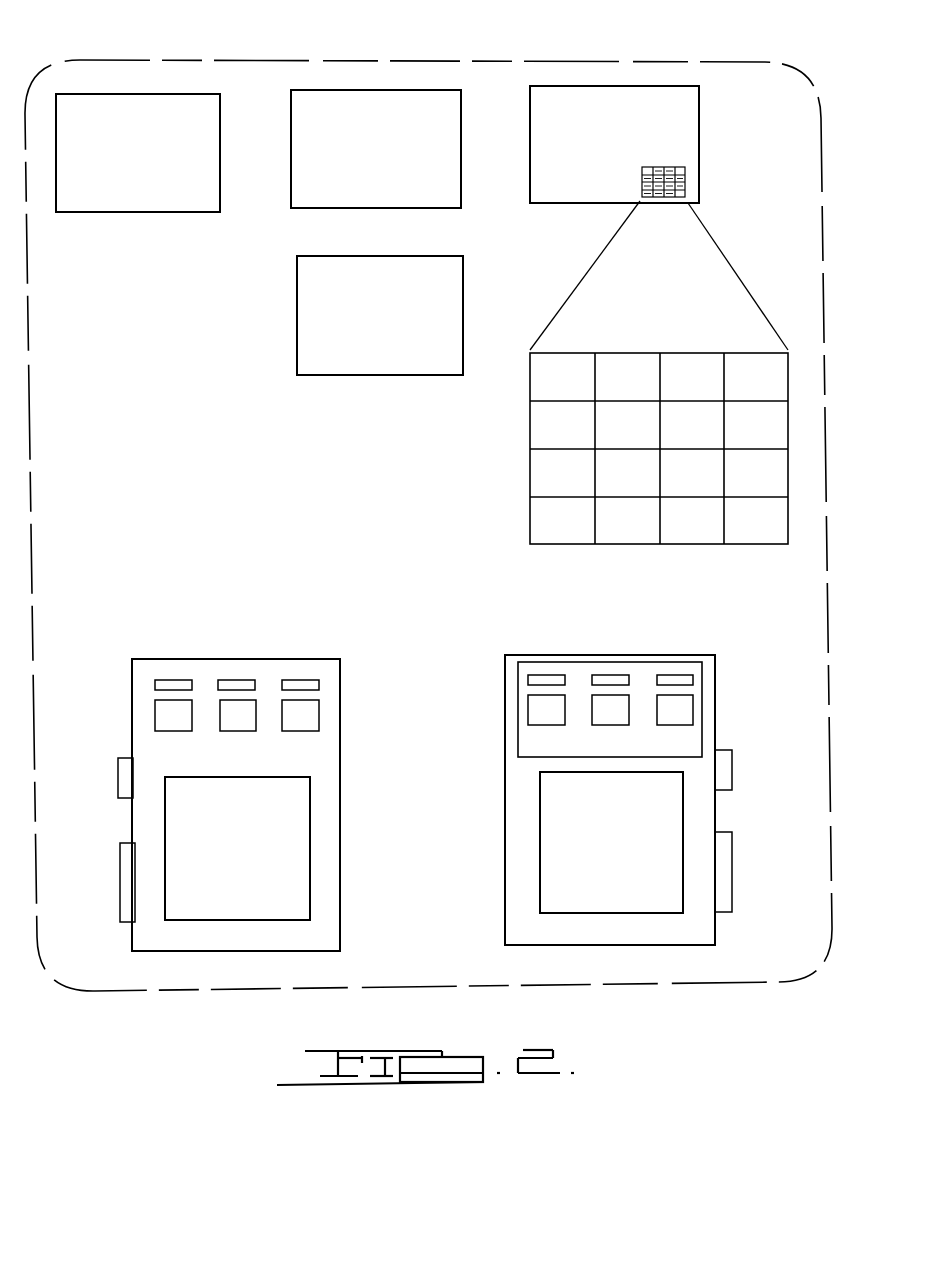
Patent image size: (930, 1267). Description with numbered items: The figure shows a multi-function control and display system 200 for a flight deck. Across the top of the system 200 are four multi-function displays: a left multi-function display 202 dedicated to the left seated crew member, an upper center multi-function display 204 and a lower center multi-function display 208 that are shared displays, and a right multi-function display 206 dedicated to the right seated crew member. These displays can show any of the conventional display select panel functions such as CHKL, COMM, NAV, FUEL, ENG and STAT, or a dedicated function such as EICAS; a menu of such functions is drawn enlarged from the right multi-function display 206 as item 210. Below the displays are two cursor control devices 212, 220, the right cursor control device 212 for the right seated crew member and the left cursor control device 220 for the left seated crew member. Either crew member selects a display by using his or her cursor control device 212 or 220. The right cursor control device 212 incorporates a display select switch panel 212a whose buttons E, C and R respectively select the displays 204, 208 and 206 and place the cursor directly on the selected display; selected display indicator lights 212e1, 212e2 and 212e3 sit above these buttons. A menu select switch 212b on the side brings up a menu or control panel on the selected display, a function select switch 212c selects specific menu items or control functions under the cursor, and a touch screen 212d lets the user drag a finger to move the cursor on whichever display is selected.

The multi-function control and display system 200 is at (78, 20).
The left multi-function display 202 is at (115, 210).
The upper center multi-function display 204 is at (297, 205).
The right multi-function display 206 is at (702, 158).
The lower center multi-function display 208 is at (315, 373).
The display select menu 210 is at (532, 477).
The right cursor control device 212 is at (620, 791).
The display select switch panel 212a is at (520, 713).
The menu select switch 212b is at (722, 773).
The function select switch 212c is at (725, 870).
The touch screen 212d is at (637, 913).
The selected display indicator light 212e1 is at (533, 678).
The selected display indicator light 212e2 is at (607, 677).
The selected display indicator light 212e3 is at (677, 678).
The left cursor control device 220 is at (200, 658).